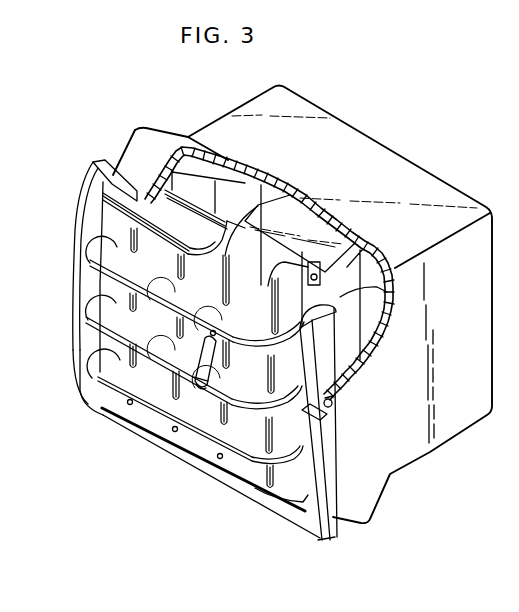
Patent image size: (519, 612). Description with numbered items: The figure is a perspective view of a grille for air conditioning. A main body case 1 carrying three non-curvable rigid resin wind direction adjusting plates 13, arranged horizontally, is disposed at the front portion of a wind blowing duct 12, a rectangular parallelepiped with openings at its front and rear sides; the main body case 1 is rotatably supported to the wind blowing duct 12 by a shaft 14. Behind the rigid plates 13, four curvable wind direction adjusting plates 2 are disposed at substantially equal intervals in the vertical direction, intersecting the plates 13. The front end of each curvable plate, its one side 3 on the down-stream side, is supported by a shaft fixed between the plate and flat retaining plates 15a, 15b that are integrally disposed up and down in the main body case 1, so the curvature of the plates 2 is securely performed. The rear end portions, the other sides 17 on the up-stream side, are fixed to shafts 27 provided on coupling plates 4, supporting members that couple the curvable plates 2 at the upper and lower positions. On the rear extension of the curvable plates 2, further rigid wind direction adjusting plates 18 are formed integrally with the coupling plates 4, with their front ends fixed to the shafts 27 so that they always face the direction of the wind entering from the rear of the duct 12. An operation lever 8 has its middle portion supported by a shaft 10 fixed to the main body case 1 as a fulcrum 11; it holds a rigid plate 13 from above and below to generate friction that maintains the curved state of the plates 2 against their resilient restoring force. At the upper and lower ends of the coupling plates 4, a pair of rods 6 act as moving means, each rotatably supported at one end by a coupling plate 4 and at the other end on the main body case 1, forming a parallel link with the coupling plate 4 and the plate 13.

The main body case 1 is at (212, 350).
The curvable wind direction adjusting plates 2 is at (118, 358).
The one side 3 is at (270, 297).
The coupling plates 4 is at (355, 246).
The rods 6 is at (320, 283).
The operation lever 8 is at (216, 379).
The shaft 10 is at (204, 350).
The fulcrum 11 is at (183, 359).
The wind blowing duct 12 is at (247, 110).
The wind direction adjusting plates 13 is at (92, 306).
The shaft 14 is at (331, 406).
The retaining plate 15a is at (93, 198).
The retaining plate 15b is at (85, 384).
The other side 17 is at (212, 194).
The wind direction adjusting plates 18 is at (281, 269).
The shafts 27 is at (242, 168).